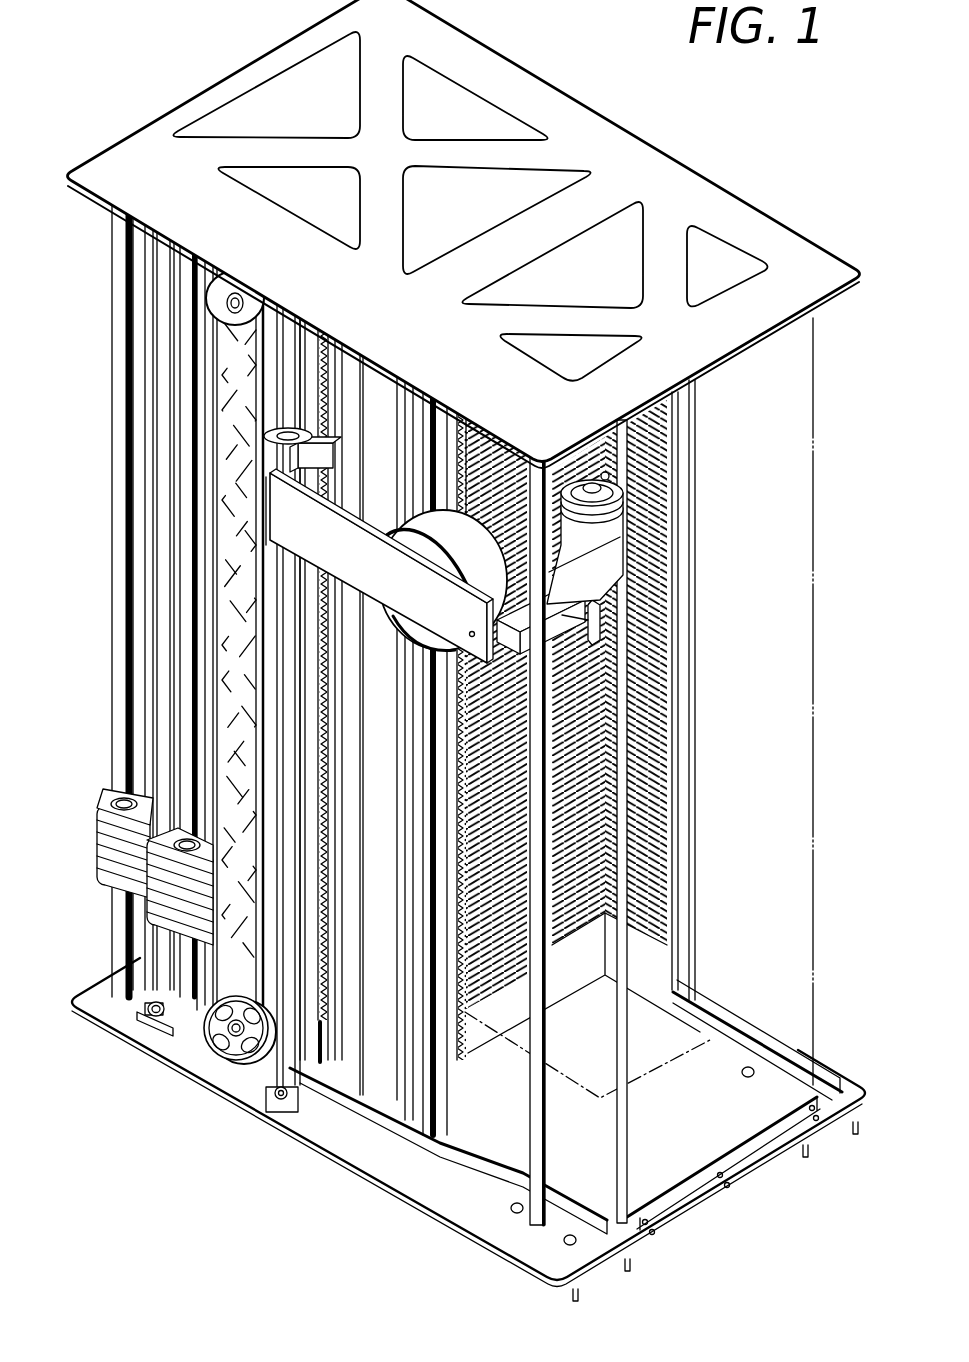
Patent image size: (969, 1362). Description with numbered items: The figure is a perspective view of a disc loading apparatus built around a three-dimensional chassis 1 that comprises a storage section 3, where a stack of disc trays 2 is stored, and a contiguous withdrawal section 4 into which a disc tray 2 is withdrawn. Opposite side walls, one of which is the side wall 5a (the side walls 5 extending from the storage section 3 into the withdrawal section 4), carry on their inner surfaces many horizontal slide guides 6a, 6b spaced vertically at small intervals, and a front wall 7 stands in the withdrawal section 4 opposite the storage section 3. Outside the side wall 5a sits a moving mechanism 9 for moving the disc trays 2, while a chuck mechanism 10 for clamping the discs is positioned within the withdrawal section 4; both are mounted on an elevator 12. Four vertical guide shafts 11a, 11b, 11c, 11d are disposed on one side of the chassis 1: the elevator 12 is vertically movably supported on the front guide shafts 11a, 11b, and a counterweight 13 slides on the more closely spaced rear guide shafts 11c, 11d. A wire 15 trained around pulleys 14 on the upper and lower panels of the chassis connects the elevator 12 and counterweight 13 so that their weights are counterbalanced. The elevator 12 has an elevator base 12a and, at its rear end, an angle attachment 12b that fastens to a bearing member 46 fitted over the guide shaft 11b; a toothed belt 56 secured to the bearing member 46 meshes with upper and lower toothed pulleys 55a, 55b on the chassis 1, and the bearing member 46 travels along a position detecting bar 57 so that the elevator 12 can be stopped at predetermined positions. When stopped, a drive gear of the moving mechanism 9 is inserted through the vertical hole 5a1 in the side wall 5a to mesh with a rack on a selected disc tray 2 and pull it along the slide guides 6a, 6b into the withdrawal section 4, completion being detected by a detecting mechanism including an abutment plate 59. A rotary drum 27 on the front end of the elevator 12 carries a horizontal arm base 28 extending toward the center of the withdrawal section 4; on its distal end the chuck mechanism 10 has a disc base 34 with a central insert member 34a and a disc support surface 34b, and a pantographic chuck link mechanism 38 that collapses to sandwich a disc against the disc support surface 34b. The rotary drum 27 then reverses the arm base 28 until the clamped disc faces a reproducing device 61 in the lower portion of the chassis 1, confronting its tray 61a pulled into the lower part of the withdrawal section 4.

The three-dimensional chassis 1 is at (180, 104).
The disc tray 2 is at (500, 483).
The storage section 3 is at (648, 445).
The withdrawal section 4 is at (480, 1168).
The side wall 5 is at (690, 855).
The side wall 5a is at (332, 370).
The vertical hole 5a1 is at (362, 385).
The horizontal slide guides 6a is at (480, 1045).
The horizontal slide guides 6b is at (640, 778).
The front wall 7 is at (815, 680).
The moving mechanism 9 is at (378, 503).
The chuck mechanism 10 is at (624, 487).
The vertical guide shaft 11a is at (505, 473).
The vertical guide shaft 11b is at (304, 335).
The vertical guide shaft 11c is at (183, 275).
The vertical guide shaft 11d is at (116, 283).
The elevator 12 is at (387, 593).
The elevator base 12a is at (585, 665).
The angle attachment 12b is at (318, 475).
The counterweight 13 is at (100, 855).
The pulleys 14 is at (150, 1003).
The wire 15 is at (150, 548).
The rotary drum 27 is at (425, 557).
The horizontal arm base 28 is at (600, 548).
The disc base 34 is at (624, 516).
The central insert member 34a is at (582, 484).
The disc support surface 34b is at (565, 480).
The pantographic chuck link mechanism 38 is at (607, 472).
The bearing member 46 is at (265, 460).
The upper toothed pulley 55a is at (236, 290).
The lower toothed pulley 55b is at (213, 1043).
The toothed belt 56 is at (205, 635).
The position detecting bar 57 is at (322, 1020).
The abutment plate 59 is at (600, 625).
The reproducing device 61 is at (580, 985).
The tray 61a is at (572, 1100).